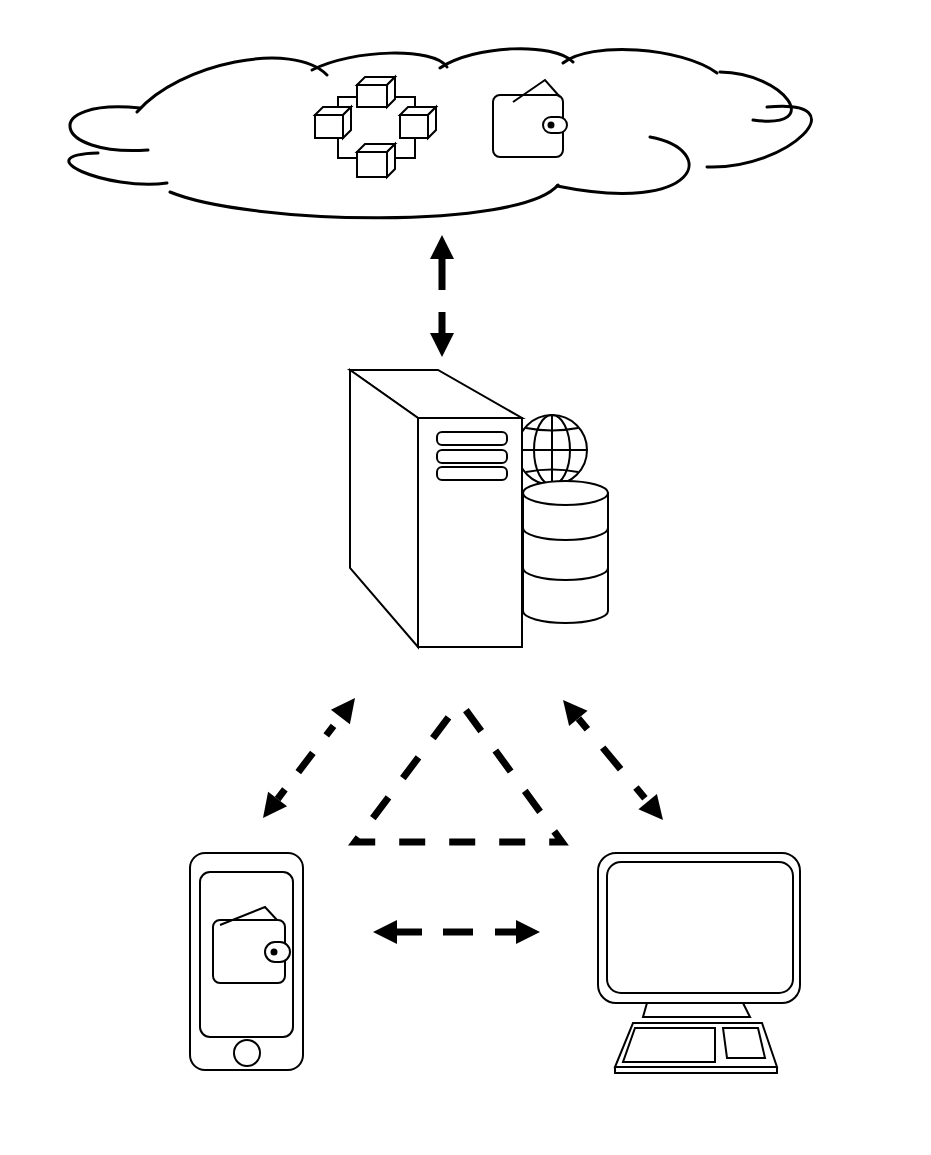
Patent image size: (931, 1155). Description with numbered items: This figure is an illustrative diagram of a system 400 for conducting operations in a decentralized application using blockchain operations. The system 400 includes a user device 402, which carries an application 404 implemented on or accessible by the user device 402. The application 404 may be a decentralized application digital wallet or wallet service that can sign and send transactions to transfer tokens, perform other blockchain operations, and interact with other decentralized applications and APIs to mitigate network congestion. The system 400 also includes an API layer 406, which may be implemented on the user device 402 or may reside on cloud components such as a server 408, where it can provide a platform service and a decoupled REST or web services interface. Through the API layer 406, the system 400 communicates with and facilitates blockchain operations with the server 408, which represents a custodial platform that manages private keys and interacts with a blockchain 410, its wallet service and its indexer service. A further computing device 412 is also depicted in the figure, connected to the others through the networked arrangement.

The system 400 is at (456, 29).
The user device 402 is at (208, 840).
The application 404 is at (223, 953).
The API layer 406 is at (481, 808).
The server 408 is at (333, 443).
The blockchain 410 is at (503, 224).
The computing device 412 is at (640, 753).